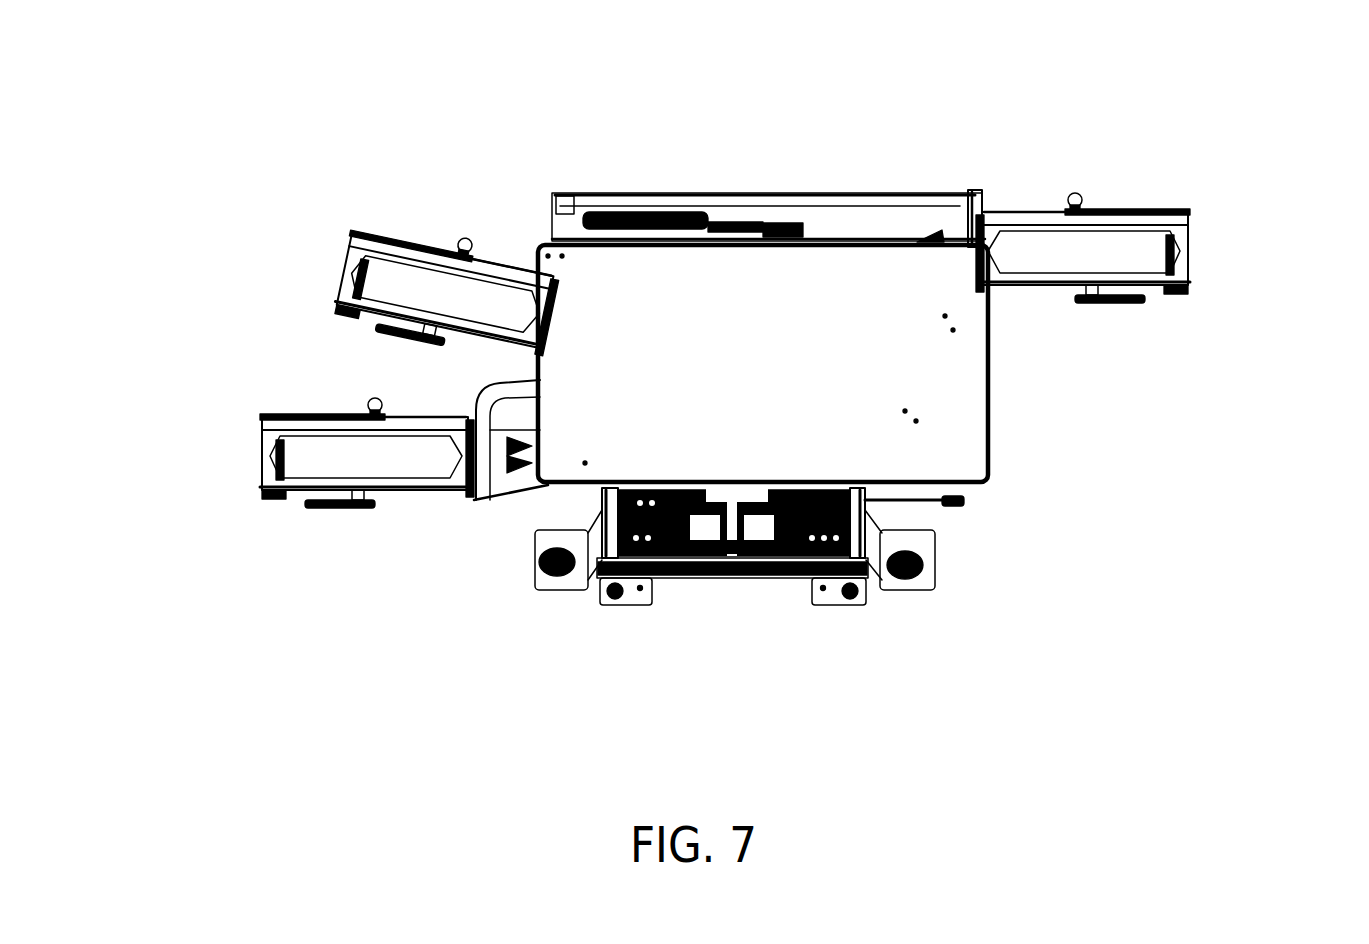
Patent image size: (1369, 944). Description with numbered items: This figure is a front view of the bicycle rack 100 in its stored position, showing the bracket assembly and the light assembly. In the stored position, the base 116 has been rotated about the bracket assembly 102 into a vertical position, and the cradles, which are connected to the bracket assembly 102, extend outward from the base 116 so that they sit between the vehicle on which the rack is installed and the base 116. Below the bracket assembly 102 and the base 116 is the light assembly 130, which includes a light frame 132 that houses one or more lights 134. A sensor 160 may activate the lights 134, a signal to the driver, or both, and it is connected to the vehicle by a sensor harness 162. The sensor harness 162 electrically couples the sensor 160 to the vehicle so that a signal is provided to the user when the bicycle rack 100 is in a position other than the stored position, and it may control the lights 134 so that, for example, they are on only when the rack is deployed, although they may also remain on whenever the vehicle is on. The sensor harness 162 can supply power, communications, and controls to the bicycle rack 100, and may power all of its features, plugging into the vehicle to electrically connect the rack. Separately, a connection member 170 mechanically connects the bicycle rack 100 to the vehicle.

The bicycle rack 100 is at (985, 113).
The bracket assembly 102 is at (594, 511).
The base 116 is at (932, 390).
The light assembly 130 is at (980, 609).
The light frame 132 is at (927, 582).
The lights 134 is at (900, 577).
The sensor 160 is at (778, 502).
The sensor harness 162 is at (963, 500).
The connection member 170 is at (826, 607).